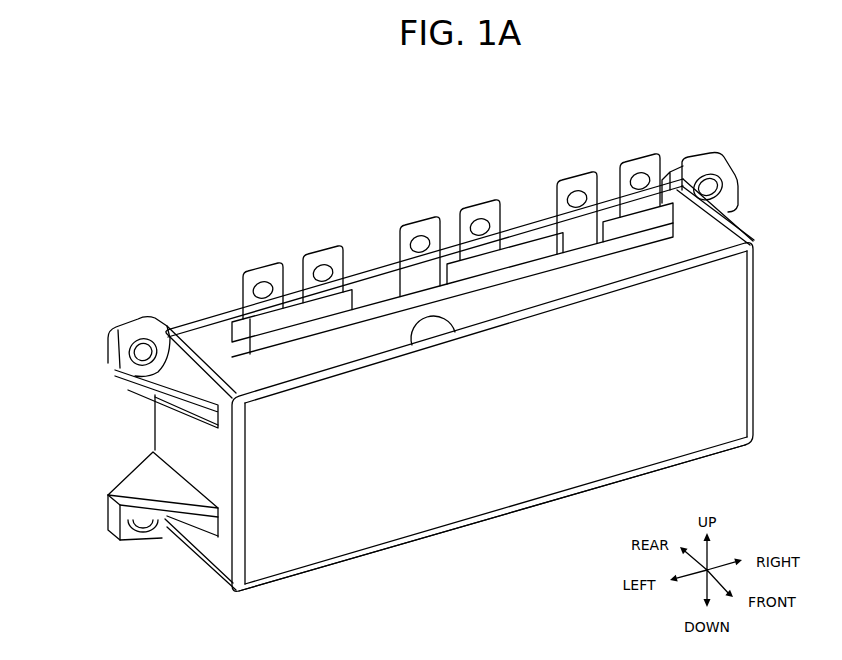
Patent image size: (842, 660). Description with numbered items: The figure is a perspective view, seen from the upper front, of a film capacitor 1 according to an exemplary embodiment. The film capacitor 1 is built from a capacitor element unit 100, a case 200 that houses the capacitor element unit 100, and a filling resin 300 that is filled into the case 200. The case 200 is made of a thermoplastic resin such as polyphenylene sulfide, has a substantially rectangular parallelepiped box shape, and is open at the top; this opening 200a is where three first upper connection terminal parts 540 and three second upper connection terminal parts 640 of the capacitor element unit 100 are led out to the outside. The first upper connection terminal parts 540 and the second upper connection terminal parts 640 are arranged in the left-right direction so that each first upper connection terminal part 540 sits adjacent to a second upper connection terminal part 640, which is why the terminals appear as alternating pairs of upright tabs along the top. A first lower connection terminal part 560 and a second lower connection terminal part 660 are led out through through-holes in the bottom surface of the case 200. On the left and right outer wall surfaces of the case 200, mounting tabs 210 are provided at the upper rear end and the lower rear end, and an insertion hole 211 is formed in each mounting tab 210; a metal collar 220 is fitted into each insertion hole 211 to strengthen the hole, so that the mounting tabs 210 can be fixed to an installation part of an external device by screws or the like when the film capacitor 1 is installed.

The film capacitor 1 is at (245, 179).
The capacitor element unit 100 is at (545, 280).
The case 200 is at (757, 313).
The opening 200a is at (450, 330).
The mounting tab 210 is at (140, 320).
The insertion hole 211 is at (144, 368).
The metal collar 220 is at (132, 378).
The filling resin 300 is at (216, 345).
The first upper connection terminal part 540 is at (256, 262).
The first lower connection terminal part 560 is at (505, 533).
The second upper connection terminal part 640 is at (314, 247).
The second lower connection terminal part 660 is at (410, 558).